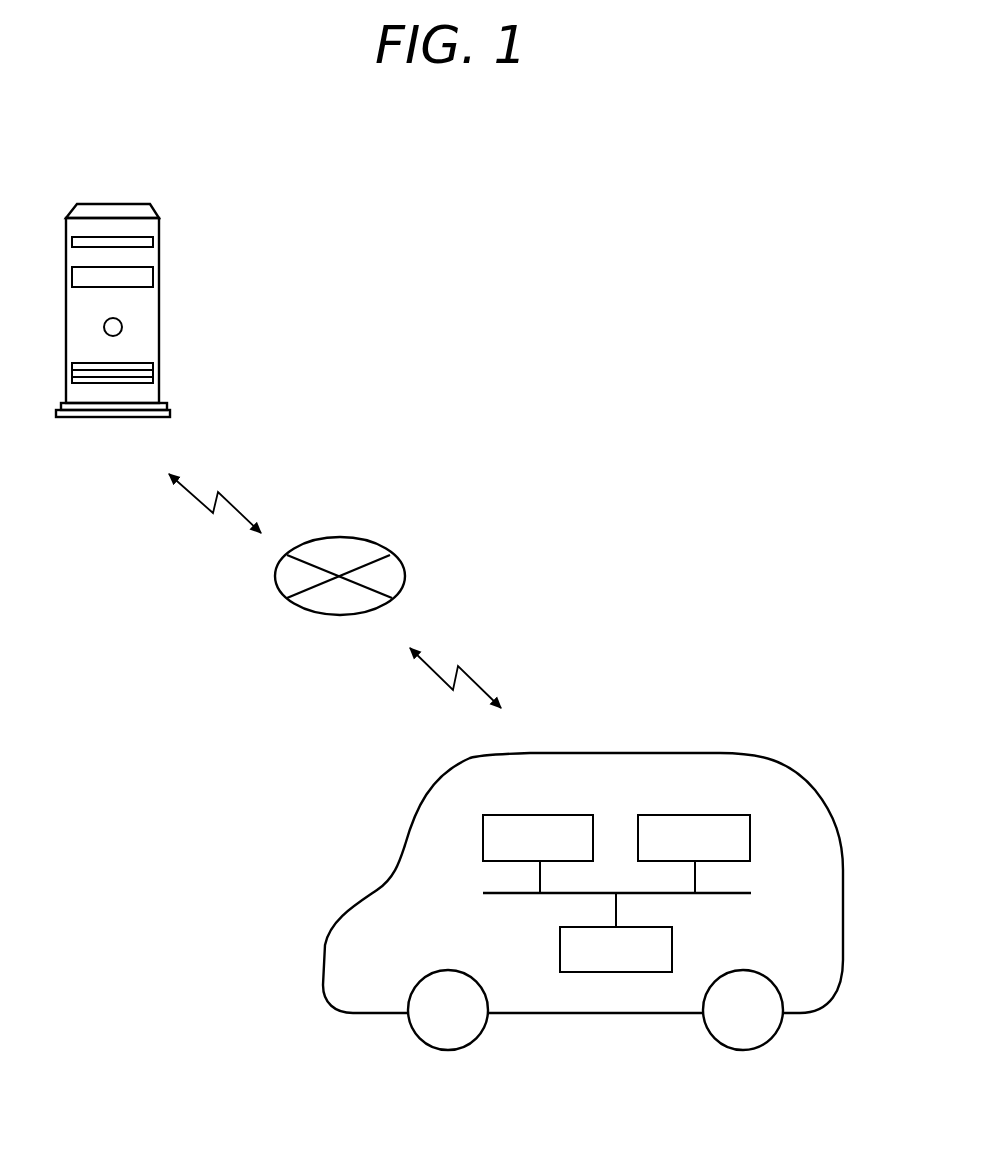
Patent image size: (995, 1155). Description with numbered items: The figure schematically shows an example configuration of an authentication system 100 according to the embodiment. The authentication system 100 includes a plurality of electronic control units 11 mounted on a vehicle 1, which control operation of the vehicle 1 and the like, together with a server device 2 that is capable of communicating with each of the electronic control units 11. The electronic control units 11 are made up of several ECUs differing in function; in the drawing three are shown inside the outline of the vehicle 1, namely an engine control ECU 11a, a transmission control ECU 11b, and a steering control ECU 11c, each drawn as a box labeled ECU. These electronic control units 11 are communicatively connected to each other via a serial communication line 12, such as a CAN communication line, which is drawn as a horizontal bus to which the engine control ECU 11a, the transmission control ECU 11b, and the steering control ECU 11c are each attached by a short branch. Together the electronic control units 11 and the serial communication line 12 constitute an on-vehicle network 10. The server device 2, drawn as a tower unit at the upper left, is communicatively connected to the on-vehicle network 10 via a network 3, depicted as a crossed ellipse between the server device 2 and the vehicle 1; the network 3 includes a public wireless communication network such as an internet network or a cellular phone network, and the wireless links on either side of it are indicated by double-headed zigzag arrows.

The authentication system 100 is at (607, 197).
The vehicle 1 is at (738, 755).
The server device 2 is at (132, 204).
The network 3 is at (365, 538).
The on-vehicle network 10 is at (460, 921).
The electronic control unit 11 is at (641, 878).
The engine control ECU 11a is at (528, 815).
The transmission control ECU 11b is at (672, 815).
The steering control ECU 11c is at (672, 937).
The serial communication line 12 is at (547, 897).